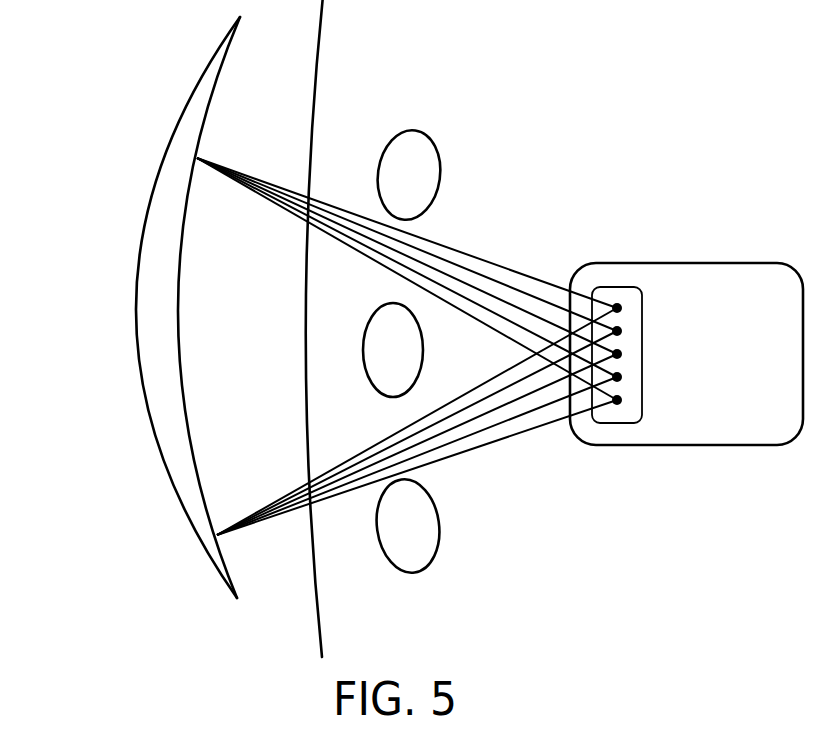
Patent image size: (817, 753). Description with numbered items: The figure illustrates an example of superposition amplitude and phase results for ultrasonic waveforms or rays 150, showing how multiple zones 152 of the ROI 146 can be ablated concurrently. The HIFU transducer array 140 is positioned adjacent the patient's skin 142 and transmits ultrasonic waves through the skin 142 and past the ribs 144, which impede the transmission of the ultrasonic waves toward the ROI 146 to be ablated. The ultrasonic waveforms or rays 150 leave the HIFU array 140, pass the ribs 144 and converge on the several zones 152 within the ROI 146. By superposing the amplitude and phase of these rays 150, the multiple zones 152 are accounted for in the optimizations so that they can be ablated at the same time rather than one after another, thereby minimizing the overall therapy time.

The HIFU transducer array 140 is at (140, 248).
The patient's skin 142 is at (319, 62).
The ribs 144 is at (440, 160).
The ROI 146 is at (687, 263).
The ultrasonic waveforms or rays 150 is at (500, 267).
The zones 152 is at (642, 352).